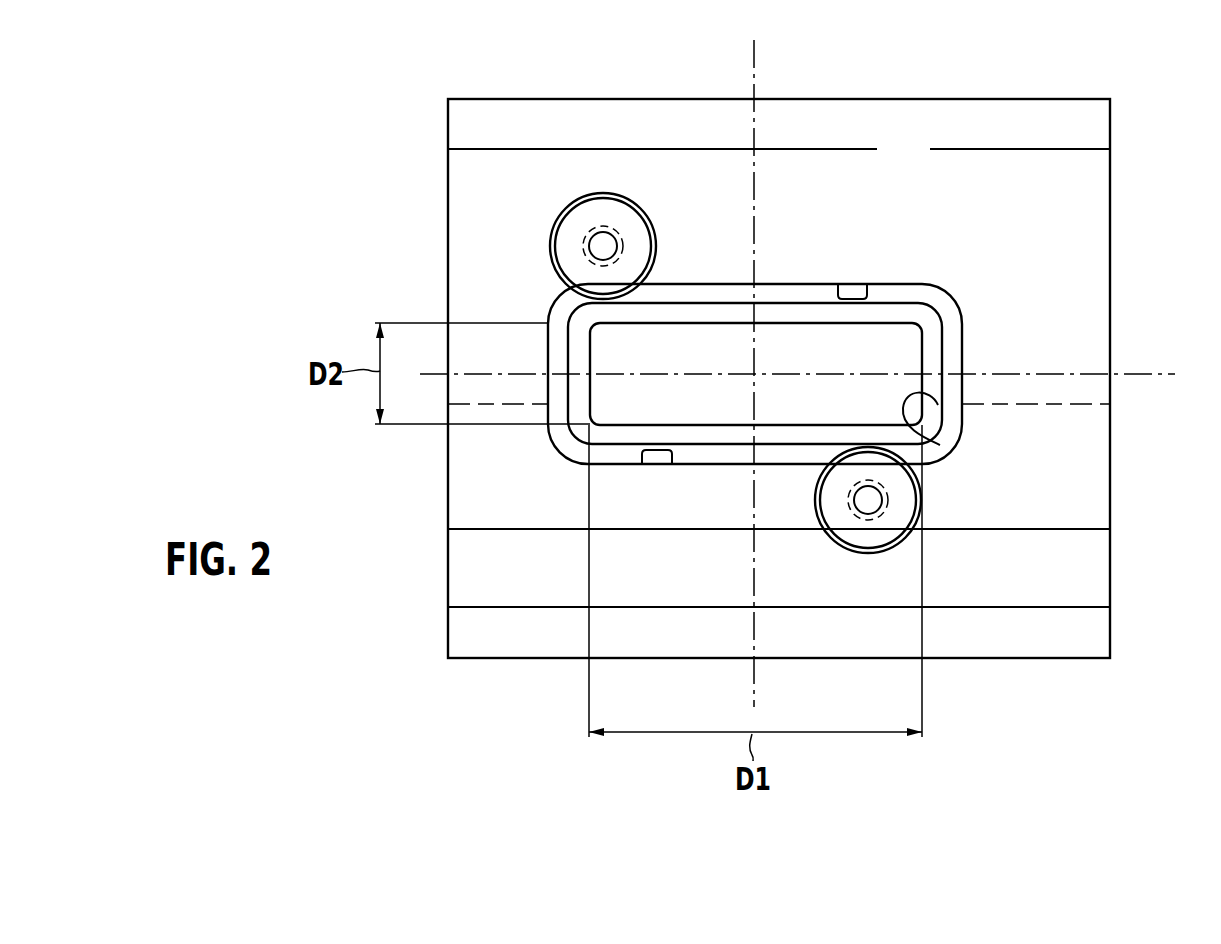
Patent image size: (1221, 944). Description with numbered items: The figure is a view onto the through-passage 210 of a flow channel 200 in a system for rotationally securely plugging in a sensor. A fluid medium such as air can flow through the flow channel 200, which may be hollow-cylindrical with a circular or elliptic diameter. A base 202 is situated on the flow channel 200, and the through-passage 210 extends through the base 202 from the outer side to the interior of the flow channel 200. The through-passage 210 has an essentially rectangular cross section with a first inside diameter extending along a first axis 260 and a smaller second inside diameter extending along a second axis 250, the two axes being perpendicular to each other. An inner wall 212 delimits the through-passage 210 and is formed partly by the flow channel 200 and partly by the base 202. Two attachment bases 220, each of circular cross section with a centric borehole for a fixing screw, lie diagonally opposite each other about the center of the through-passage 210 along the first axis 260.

The flow channel 200 is at (1075, 575).
The base 202 is at (952, 293).
The through-passage 210 is at (687, 347).
The inner wall 212 is at (938, 444).
The attachment base 220 is at (573, 238).
The second axis 250 is at (756, 53).
The first axis 260 is at (1165, 375).